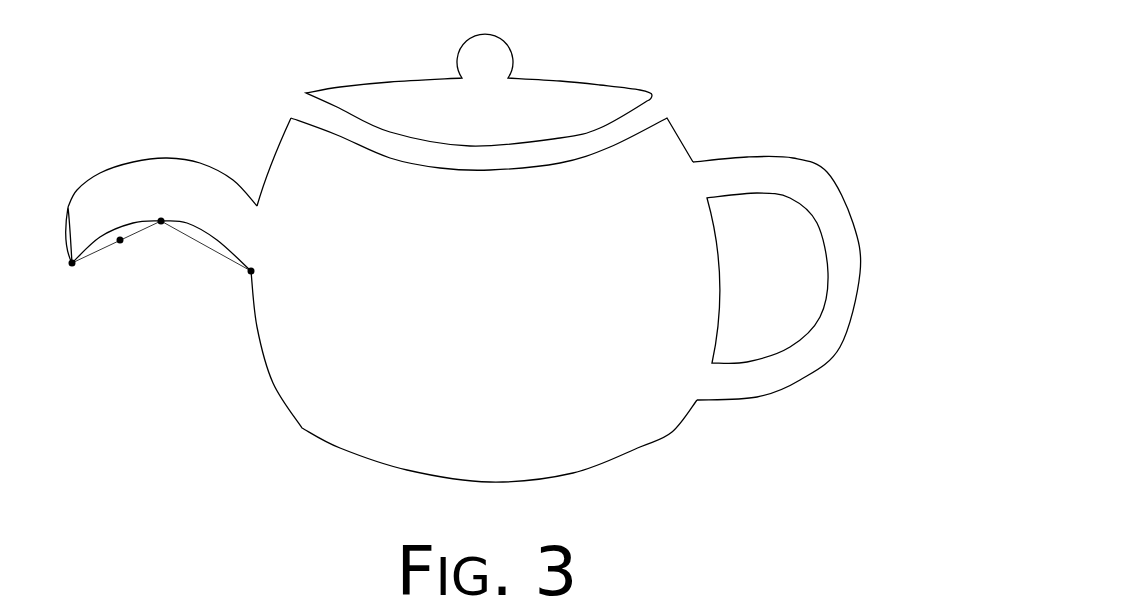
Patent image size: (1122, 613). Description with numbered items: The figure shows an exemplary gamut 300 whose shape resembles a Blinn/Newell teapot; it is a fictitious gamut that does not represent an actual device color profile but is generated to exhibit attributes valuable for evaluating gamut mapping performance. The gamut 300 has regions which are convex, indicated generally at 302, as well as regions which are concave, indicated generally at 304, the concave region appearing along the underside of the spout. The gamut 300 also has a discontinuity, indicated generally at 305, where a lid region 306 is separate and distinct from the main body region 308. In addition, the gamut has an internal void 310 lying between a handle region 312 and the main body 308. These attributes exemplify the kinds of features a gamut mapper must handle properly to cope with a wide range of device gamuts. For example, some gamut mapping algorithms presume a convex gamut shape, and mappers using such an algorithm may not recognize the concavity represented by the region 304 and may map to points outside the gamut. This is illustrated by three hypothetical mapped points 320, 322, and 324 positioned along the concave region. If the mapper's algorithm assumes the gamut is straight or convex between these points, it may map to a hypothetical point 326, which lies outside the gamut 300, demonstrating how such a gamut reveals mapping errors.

The gamut 300 is at (748, 28).
The convex regions 302 is at (268, 161).
The concave regions 304 is at (181, 229).
The discontinuity 305 is at (658, 111).
The lid region 306 is at (540, 77).
The main body region 308 is at (468, 321).
The internal void 310 is at (753, 284).
The handle region 312 is at (829, 176).
The hypothetical mapped point 320 is at (72, 266).
The hypothetical mapped point 322 is at (161, 218).
The hypothetical mapped point 324 is at (254, 269).
The hypothetical point 326 is at (120, 243).